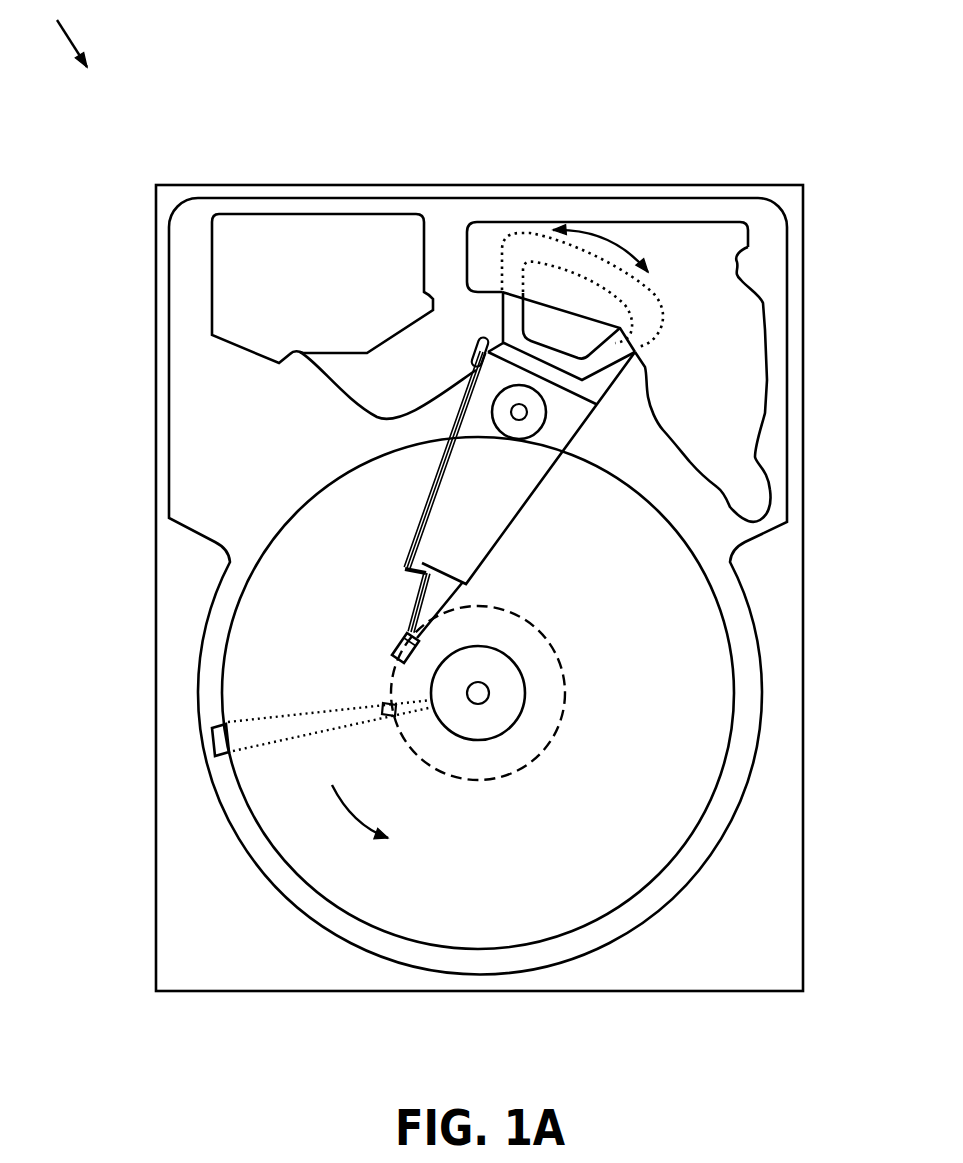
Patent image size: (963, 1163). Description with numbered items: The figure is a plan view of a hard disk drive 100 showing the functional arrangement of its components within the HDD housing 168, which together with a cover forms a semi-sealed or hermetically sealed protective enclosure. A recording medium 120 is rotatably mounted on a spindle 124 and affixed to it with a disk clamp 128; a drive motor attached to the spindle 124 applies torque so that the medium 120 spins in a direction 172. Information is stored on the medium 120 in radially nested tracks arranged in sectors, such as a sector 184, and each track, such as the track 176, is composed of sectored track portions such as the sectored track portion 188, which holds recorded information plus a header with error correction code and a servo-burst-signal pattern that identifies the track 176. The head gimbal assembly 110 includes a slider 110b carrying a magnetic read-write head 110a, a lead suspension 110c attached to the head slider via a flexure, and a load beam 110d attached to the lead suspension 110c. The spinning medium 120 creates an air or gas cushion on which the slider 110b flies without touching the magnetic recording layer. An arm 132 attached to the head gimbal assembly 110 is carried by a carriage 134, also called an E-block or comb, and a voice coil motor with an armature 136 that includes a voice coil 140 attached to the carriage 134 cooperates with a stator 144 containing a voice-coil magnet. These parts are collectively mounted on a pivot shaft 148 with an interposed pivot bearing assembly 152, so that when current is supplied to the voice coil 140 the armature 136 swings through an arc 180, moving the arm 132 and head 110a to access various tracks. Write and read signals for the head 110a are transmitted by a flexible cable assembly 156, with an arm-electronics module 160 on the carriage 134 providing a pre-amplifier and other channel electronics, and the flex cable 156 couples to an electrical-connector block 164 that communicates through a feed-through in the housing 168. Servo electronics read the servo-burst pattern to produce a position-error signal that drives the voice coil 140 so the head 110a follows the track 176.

The hard disk drive 100 is at (60, 33).
The head gimbal assembly 110 is at (253, 507).
The magnetic read-write head 110a is at (395, 660).
The slider 110b is at (408, 620).
The lead suspension 110c is at (410, 590).
The load beam 110d is at (410, 566).
The recording medium 120 is at (662, 645).
The spindle 124 is at (478, 693).
The disk clamp 128 is at (505, 708).
The arm 132 is at (470, 528).
The carriage 134 is at (537, 443).
The armature 136 is at (493, 345).
The voice coil 140 is at (513, 303).
The stator 144 is at (732, 313).
The pivot shaft 148 is at (519, 412).
The pivot bearing assembly 152 is at (530, 424).
The flexible cable assembly 156 is at (337, 385).
The arm-electronics module 160 is at (468, 387).
The electrical-connector block 164 is at (237, 287).
The HDD housing 168 is at (783, 197).
The direction 172 is at (366, 818).
The track 176 is at (556, 656).
The arc 180 is at (600, 243).
The sector 184 is at (212, 742).
The sectored track portion 188 is at (386, 704).